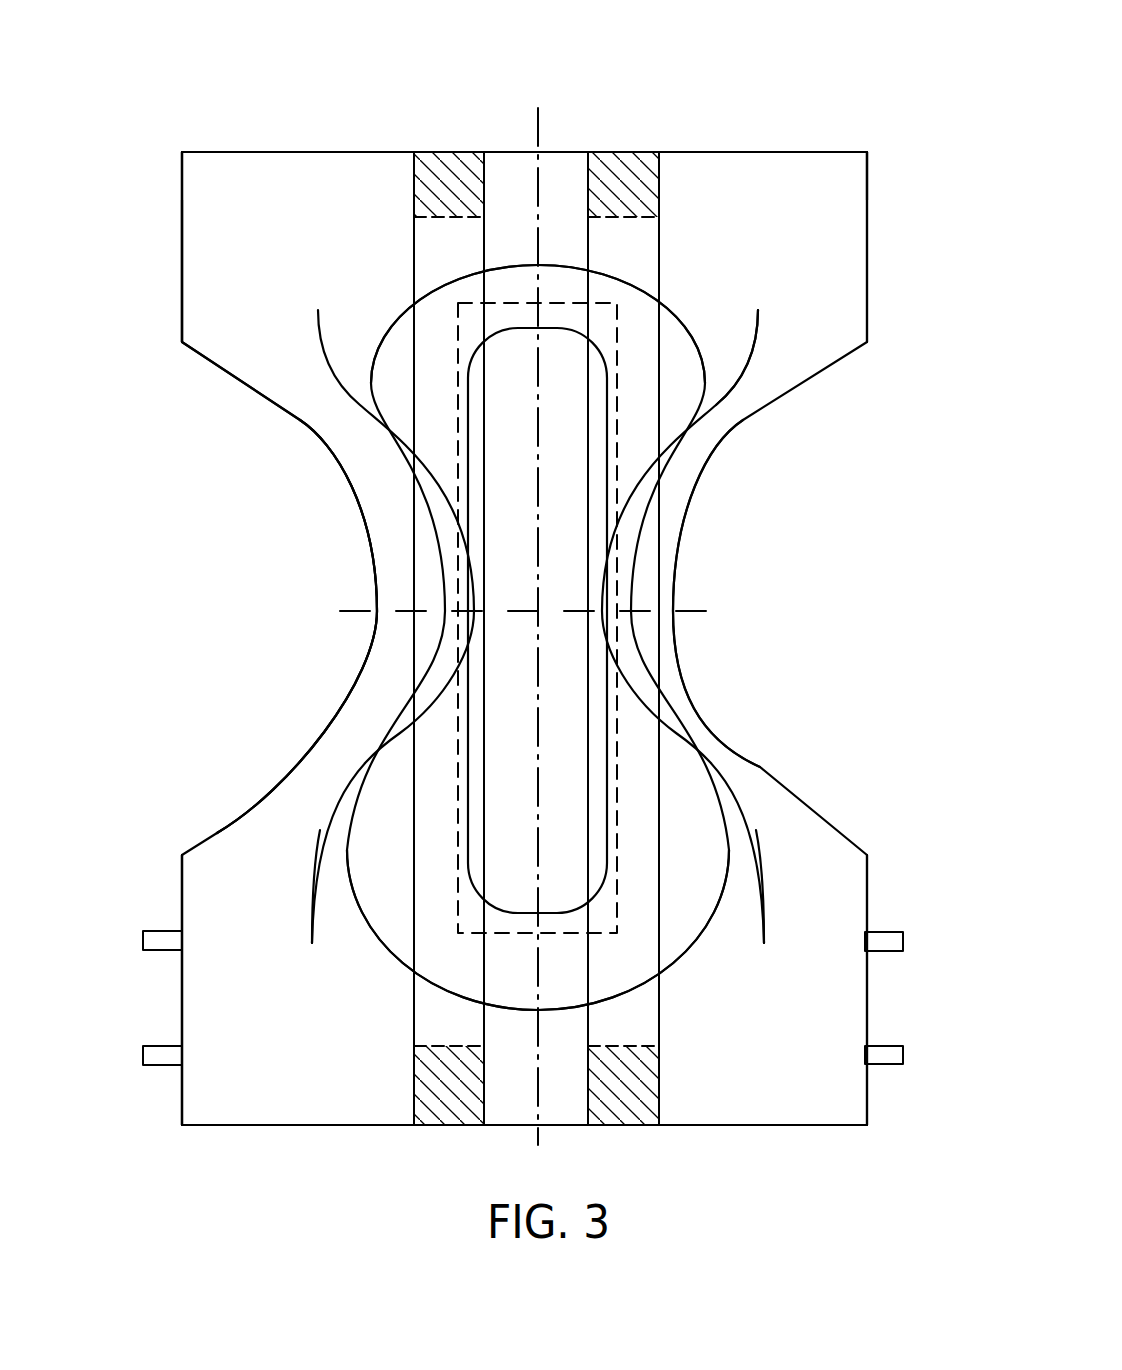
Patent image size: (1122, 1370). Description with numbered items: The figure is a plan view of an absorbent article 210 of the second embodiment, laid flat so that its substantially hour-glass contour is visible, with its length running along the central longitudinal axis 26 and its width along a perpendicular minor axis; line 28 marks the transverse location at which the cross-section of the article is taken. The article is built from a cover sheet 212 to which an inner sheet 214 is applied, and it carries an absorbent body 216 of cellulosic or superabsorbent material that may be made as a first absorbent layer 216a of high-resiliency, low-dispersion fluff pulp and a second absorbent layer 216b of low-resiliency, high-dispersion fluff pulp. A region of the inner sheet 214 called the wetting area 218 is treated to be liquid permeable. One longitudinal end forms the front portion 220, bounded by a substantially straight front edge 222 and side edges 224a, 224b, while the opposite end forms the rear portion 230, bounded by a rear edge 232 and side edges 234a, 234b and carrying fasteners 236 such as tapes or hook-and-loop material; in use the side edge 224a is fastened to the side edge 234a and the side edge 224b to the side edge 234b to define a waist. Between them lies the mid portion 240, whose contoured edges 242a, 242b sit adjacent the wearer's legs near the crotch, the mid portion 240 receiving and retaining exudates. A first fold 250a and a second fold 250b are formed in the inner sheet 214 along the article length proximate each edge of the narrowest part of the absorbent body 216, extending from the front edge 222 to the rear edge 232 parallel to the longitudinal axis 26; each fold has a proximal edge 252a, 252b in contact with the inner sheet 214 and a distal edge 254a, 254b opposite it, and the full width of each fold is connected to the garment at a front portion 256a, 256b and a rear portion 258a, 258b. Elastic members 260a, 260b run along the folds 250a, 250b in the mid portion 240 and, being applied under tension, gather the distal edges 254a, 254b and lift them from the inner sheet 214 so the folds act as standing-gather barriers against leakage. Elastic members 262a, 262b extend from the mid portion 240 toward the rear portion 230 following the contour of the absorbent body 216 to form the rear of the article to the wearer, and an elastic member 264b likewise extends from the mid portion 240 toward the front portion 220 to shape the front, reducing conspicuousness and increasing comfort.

The absorbent article 210 is at (206, 103).
The cover sheet 212 is at (302, 182).
The inner sheet 214 is at (250, 210).
The absorbent body 216 is at (681, 368).
The first absorbent layer 216a is at (467, 818).
The second absorbent layer 216b is at (662, 305).
The wetting area 218 is at (463, 302).
The front portion 220 is at (168, 248).
The front edge 222 is at (767, 151).
The side edge 224a is at (182, 175).
The side edge 224b is at (867, 270).
The longitudinal centerline 26 is at (538, 128).
The line 28 is at (703, 611).
The rear portion 230 is at (162, 995).
The rear edge 232 is at (758, 1127).
The side edge 234a is at (182, 870).
The side edge 234b is at (866, 856).
The fasteners 236 is at (143, 940).
The mid portion 240 is at (333, 565).
The contoured edge 242a is at (290, 412).
The contoured edge 242b is at (780, 407).
The first fold 250a is at (448, 162).
The second fold 250b is at (621, 160).
The proximal edge 252a is at (413, 252).
The proximal edge 252b is at (660, 245).
The distal edge 254a is at (507, 236).
The distal edge 254b is at (590, 802).
The front portion 256a is at (425, 188).
The front portion 256b is at (643, 190).
The rear portion 258a is at (422, 1070).
The rear portion 258b is at (648, 1072).
The elastic member 260a is at (470, 535).
The elastic member 260b is at (597, 557).
The elastic member 262a is at (312, 903).
The elastic member 262b is at (762, 907).
The elastic member 264b is at (760, 343).